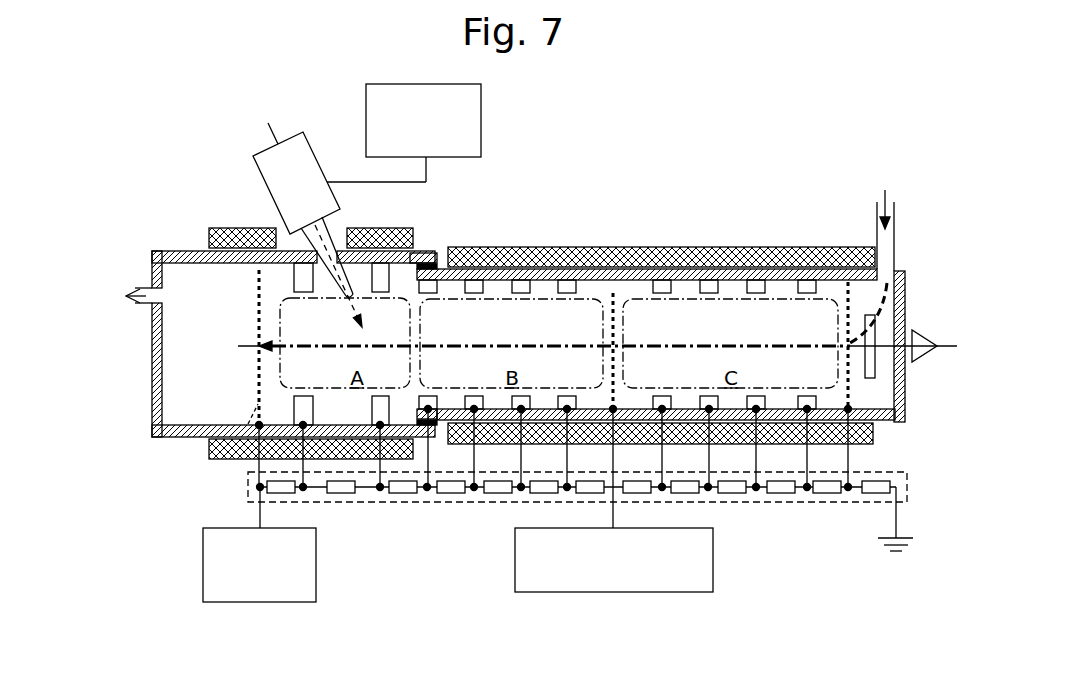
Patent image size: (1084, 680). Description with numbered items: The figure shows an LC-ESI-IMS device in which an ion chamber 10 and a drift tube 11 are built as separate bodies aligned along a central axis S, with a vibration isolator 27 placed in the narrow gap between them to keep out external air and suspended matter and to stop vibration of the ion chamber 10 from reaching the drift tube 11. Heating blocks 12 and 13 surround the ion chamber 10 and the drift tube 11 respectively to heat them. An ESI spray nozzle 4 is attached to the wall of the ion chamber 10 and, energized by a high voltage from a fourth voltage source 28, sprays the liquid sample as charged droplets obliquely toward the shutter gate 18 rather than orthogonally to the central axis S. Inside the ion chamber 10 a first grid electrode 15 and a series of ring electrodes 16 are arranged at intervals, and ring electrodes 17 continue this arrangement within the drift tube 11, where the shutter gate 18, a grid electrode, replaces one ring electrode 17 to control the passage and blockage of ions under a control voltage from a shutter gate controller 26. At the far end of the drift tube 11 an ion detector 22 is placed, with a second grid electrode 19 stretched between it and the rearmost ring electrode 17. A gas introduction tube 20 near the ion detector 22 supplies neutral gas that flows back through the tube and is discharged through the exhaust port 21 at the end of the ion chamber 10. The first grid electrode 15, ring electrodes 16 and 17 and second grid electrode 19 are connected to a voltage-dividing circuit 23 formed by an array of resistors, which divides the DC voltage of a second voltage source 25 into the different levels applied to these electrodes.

The ESI spray nozzle 4 is at (262, 184).
The ion chamber 10 is at (188, 252).
The drift tube 11 is at (502, 272).
The heating block 12 is at (235, 228).
The heating block 13 is at (795, 248).
The first grid electrode 15 is at (228, 462).
The ring electrodes 16 is at (318, 425).
The ring electrodes 17 is at (710, 285).
The shutter gate 18 is at (597, 255).
The second grid electrode 19 is at (887, 420).
The gas introduction tube 20 is at (897, 223).
The exhaust port 21 is at (148, 282).
The ion detector 22 is at (876, 373).
The voltage-dividing circuit 23 is at (477, 502).
The second voltage source 25 is at (243, 602).
The shutter gate controller 26 is at (623, 592).
The vibration isolator 27 is at (432, 252).
The fourth voltage source 28 is at (481, 114).
The central axis S is at (567, 343).